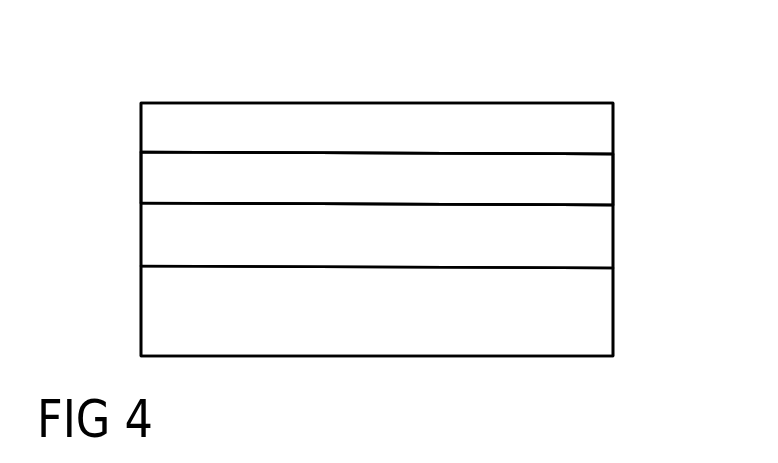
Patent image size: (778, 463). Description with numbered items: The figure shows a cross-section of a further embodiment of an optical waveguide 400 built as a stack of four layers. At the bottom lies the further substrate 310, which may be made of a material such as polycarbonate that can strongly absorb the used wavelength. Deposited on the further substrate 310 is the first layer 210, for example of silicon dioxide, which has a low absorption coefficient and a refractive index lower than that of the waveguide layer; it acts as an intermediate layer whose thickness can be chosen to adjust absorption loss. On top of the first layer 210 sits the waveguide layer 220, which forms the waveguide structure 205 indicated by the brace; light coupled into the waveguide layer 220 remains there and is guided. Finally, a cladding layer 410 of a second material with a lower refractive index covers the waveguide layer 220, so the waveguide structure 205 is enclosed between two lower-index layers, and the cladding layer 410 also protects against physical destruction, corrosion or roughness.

The optical waveguide 400 is at (644, 63).
The cladding layer 410 is at (618, 131).
The waveguide layer 220 is at (616, 183).
The first layer 210 is at (617, 246).
The further substrate 310 is at (617, 321).
The waveguide structure 205 is at (129, 148).